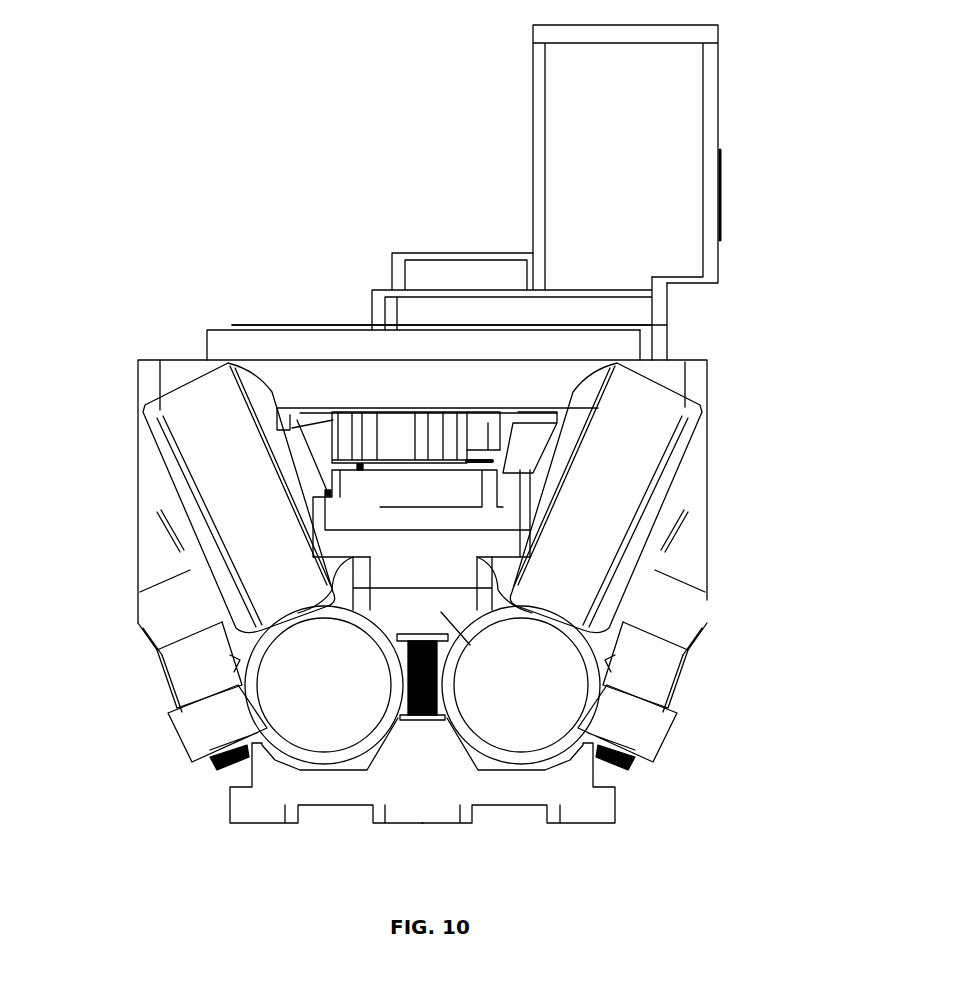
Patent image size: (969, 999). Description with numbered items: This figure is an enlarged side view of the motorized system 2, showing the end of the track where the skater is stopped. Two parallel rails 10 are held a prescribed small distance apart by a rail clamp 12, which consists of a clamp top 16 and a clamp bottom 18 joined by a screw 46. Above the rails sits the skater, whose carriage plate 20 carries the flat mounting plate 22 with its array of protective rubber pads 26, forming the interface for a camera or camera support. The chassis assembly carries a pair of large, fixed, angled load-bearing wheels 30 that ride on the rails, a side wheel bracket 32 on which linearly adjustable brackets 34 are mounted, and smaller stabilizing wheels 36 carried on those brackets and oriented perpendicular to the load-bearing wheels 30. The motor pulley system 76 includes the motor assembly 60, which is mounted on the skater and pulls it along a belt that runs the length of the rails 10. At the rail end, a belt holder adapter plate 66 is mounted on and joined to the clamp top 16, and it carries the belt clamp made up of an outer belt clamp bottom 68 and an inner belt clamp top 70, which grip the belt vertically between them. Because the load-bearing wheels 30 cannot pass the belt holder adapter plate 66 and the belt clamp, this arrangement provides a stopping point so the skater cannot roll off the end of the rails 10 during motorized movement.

The system 2 is at (233, 114).
The motor assembly 60 is at (574, 97).
The motor pulley system 76 is at (455, 189).
The flat mounting plate 22 is at (215, 340).
The protective rubber pads 26 is at (257, 320).
The carriage plate 20 is at (170, 366).
The load-bearing wheels 30 is at (147, 410).
The belt clamp top 70 is at (383, 481).
The belt clamp bottom 68 is at (337, 513).
The belt holder adapter plate 66 is at (347, 542).
The side wheel bracket 32 is at (152, 620).
The linearly adjustable brackets 34 is at (175, 675).
The stabilizing wheels 36 is at (187, 727).
The rails 10 is at (267, 731).
The clamp bottom 18 is at (260, 813).
The rail clamps 12 is at (295, 865).
The screw 46 is at (397, 720).
The clamp top 16 is at (470, 645).